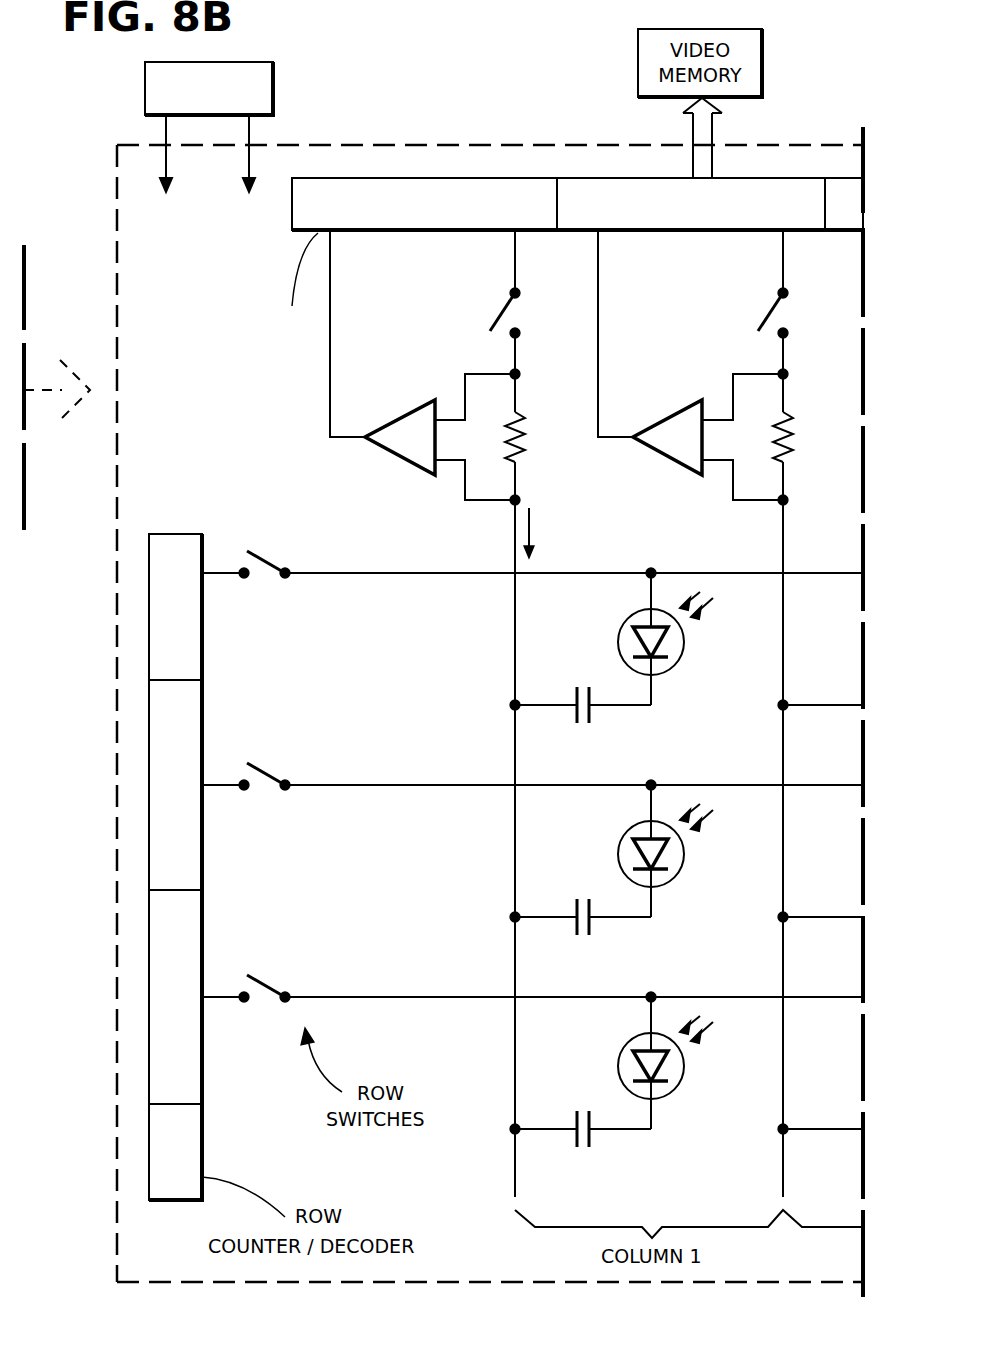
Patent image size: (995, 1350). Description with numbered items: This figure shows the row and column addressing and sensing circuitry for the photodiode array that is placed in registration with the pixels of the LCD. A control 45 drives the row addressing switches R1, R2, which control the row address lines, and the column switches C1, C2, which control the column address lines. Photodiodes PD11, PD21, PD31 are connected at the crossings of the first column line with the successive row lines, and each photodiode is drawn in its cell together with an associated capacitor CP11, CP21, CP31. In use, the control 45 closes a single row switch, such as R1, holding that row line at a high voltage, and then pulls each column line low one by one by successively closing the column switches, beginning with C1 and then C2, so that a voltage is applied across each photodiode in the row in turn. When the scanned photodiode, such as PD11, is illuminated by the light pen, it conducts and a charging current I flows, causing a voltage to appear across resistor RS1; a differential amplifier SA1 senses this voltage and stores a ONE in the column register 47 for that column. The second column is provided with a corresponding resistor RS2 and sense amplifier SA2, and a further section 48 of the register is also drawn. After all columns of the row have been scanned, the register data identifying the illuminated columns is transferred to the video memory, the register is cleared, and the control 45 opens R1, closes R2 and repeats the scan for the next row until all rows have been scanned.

The control 45 is at (273, 63).
The column register 47 is at (422, 180).
The column register second section 48 is at (605, 178).
The column switch C1 is at (500, 318).
The column switch C2 is at (768, 318).
The resistor RS1 is at (523, 441).
The sense resistor 2 RS2 is at (791, 441).
The differential amplifier SA1 is at (390, 452).
The sense amplifier 2 SA2 is at (657, 452).
The charging current I is at (533, 526).
The row switch R1 is at (267, 554).
The row switch R2 is at (267, 766).
The photodiode PD11 is at (665, 638).
The photodiode row 2 column 1 PD21 is at (665, 850).
The photodiode row 3 column 1 PD31 is at (665, 1062).
The pixel capacitor row 1 column 1 CP11 is at (595, 717).
The pixel capacitor row 2 column 1 CP21 is at (595, 929).
The pixel capacitor row 3 column 1 CP31 is at (595, 1141).